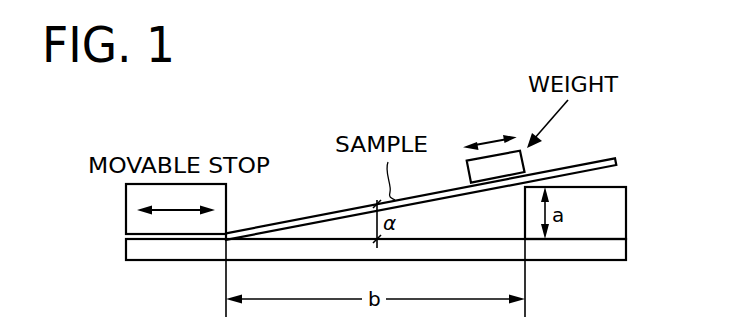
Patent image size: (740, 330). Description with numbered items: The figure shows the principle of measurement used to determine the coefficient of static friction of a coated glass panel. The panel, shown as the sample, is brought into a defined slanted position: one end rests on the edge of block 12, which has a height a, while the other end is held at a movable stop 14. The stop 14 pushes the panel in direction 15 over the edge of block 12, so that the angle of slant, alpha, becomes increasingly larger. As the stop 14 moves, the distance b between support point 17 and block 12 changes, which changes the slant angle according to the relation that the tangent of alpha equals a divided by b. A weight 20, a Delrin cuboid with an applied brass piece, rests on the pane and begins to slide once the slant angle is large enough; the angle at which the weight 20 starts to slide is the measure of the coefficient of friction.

The block 12 is at (615, 213).
The movable stop 14 is at (133, 222).
The direction 15 is at (170, 213).
The support point 17 is at (228, 241).
The weight 20 is at (512, 165).